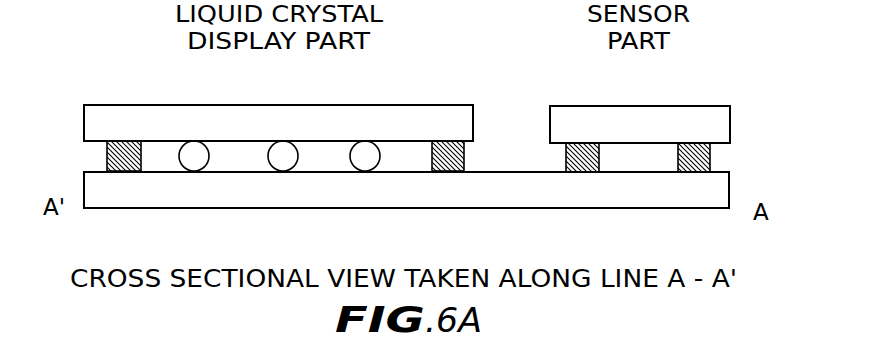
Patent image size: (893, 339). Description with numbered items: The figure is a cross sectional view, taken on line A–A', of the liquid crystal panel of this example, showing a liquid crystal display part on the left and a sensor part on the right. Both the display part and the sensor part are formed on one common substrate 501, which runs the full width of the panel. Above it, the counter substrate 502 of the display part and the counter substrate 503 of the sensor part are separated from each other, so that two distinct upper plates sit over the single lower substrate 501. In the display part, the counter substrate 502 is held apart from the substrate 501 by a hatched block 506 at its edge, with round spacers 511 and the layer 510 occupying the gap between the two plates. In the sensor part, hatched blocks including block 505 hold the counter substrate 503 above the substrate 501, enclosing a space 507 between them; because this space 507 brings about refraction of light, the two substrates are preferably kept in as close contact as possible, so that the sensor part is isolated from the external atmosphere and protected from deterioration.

The substrate 501 is at (608, 197).
The counter substrate of the display part 502 is at (250, 118).
The counter substrate of the sensor part 503 is at (587, 123).
The sealant of sensor part 505 is at (693, 172).
The sealant of liquid crystal display part 506 is at (444, 140).
The space 507 is at (638, 160).
The liquid crystal layer 510 is at (247, 155).
The spacer 511 is at (364, 157).